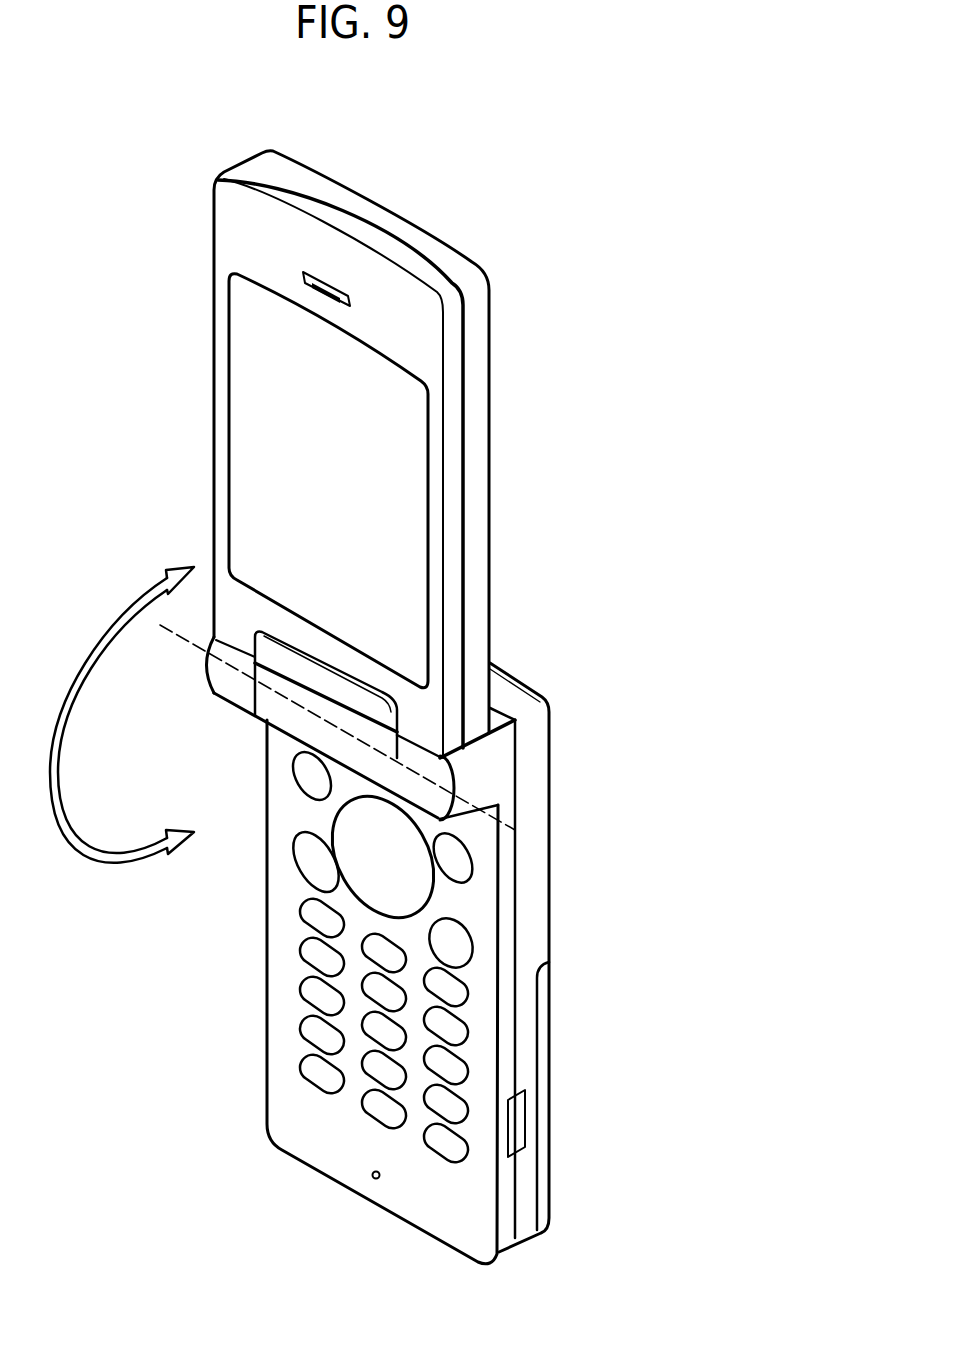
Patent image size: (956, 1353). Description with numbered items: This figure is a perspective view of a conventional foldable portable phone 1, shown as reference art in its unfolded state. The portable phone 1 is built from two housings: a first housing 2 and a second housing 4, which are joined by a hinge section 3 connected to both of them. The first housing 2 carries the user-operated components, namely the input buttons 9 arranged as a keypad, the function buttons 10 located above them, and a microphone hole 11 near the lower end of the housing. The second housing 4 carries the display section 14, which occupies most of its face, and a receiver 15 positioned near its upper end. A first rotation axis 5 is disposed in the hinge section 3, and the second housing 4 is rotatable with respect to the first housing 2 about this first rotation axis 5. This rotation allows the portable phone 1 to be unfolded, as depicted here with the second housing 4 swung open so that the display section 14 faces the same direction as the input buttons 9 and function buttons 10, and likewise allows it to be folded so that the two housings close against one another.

The portable phone 1 is at (585, 205).
The first housing 2 is at (550, 833).
The hinge section 3 is at (357, 733).
The second housing 4 is at (489, 397).
The first rotation axis 5 is at (183, 648).
The input buttons 9 is at (253, 893).
The function buttons 10 is at (253, 750).
The microphone hole 11 is at (377, 1180).
The display section 14 is at (390, 520).
The receiver 15 is at (305, 284).